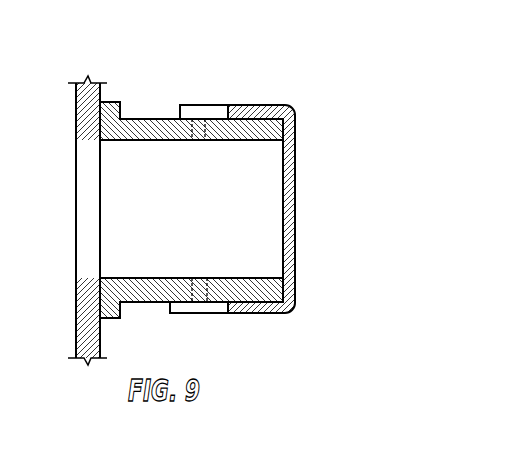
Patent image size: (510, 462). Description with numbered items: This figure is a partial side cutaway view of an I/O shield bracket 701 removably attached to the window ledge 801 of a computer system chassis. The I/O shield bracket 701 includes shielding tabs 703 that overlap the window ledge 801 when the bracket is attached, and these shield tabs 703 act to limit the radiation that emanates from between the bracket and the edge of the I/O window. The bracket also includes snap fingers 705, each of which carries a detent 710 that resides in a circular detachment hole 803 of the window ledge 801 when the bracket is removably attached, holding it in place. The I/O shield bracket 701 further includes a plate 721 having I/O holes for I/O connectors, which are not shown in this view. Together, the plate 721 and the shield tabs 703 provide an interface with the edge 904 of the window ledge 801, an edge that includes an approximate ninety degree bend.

The I/O shield bracket 701 is at (295, 110).
The shielding tab 703 is at (250, 104).
The snap finger 705 is at (199, 105).
The detent 710 is at (192, 288).
The plate 721 is at (296, 207).
The window ledge 801 is at (163, 141).
The circular detachment hole 803 is at (201, 122).
The edge of window ledge 904 is at (273, 127).